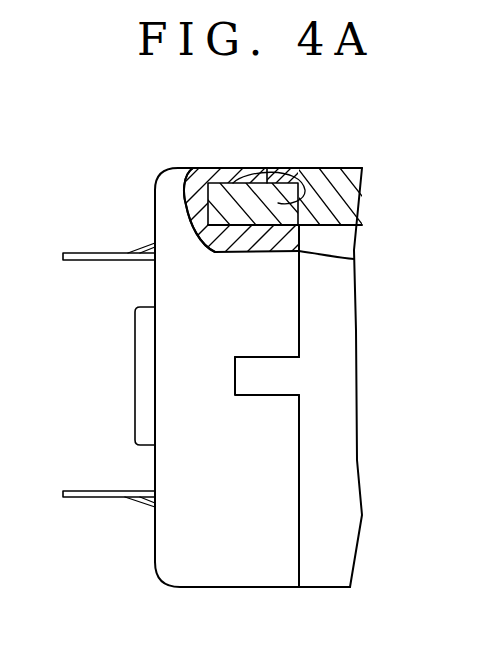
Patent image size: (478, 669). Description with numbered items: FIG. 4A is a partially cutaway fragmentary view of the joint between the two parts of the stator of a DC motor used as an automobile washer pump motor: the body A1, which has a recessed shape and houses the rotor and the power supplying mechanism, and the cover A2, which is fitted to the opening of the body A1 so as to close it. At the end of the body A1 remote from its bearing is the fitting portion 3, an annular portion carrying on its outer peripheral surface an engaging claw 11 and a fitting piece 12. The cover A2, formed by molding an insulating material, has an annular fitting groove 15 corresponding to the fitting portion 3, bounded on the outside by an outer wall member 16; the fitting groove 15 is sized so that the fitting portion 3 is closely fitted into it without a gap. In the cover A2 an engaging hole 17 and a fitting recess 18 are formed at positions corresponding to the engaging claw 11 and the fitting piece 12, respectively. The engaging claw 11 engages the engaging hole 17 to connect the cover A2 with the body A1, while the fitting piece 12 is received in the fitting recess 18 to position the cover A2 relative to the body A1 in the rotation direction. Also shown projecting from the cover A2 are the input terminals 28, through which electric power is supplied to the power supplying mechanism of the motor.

The fitting portion 3 is at (308, 174).
The engaging claw 11 is at (262, 180).
The fitting piece 12 is at (267, 382).
The fitting groove 15 is at (220, 185).
The outer wall member 16 is at (288, 176).
The engaging hole 17 is at (243, 178).
The fitting recess 18 is at (265, 362).
The input terminals 28 is at (90, 262).
The body A1 is at (355, 297).
The cover A2 is at (155, 212).